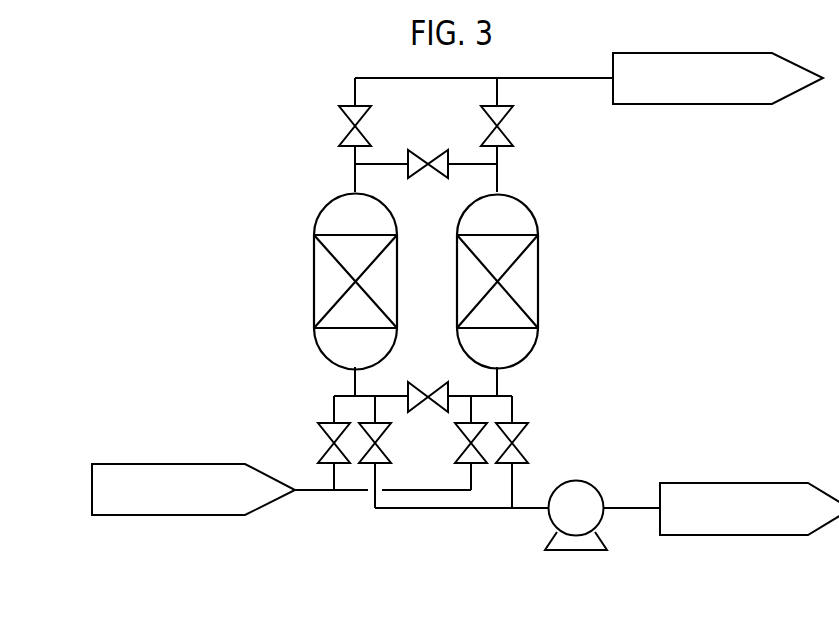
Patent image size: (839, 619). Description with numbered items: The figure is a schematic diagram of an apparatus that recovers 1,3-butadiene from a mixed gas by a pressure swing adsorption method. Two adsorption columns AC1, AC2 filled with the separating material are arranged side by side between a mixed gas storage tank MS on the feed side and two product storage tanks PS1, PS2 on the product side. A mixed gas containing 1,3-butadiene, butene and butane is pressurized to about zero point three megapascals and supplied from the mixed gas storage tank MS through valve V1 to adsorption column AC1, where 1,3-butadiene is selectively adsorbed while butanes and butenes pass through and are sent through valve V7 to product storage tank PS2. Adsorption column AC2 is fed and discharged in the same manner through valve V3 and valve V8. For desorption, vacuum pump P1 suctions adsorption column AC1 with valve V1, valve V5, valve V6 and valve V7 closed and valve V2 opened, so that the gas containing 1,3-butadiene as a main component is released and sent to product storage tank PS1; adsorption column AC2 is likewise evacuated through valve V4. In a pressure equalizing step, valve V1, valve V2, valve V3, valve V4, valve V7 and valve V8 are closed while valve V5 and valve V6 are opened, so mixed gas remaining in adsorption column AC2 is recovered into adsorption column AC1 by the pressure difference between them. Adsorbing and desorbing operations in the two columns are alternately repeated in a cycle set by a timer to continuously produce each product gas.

The valve V1 is at (325, 443).
The valve V2 is at (387, 443).
The valve V3 is at (460, 443).
The valve V4 is at (526, 443).
The valve V5 is at (428, 386).
The valve V6 is at (428, 174).
The valve V7 is at (343, 126).
The valve V8 is at (512, 126).
The adsorption column AC1 is at (325, 273).
The adsorption column AC2 is at (528, 273).
The vacuum pump P1 is at (576, 532).
The mixed gas storage tank MS is at (205, 480).
The product storage tank PS1 is at (768, 498).
The product storage tank PS2 is at (733, 92).